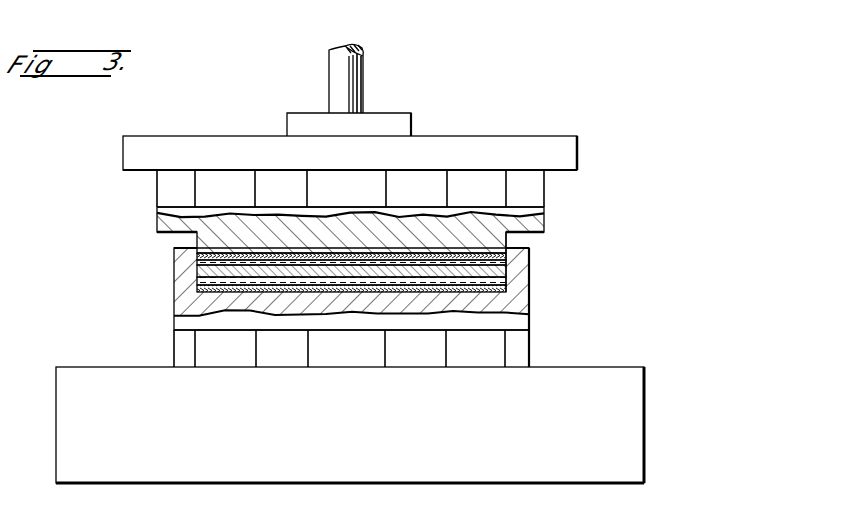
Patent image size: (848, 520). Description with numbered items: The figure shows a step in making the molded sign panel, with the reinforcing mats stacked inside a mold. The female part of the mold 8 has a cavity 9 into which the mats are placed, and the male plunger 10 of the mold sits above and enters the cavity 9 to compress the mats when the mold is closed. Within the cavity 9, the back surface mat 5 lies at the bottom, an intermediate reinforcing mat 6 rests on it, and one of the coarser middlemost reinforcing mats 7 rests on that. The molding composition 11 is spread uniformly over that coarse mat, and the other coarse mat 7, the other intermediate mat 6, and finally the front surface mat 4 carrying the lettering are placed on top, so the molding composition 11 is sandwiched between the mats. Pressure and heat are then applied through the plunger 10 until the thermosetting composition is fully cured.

The front surface mat 4 is at (194, 250).
The back surface mat 5 is at (184, 294).
The intermediate reinforcing mats 6 is at (197, 257).
The middlemost reinforcing mats 7 is at (197, 262).
The female part of the mold 8 is at (518, 286).
The cavity 9 is at (505, 270).
The male plunger 10 is at (511, 243).
The molding composition 11 is at (197, 272).